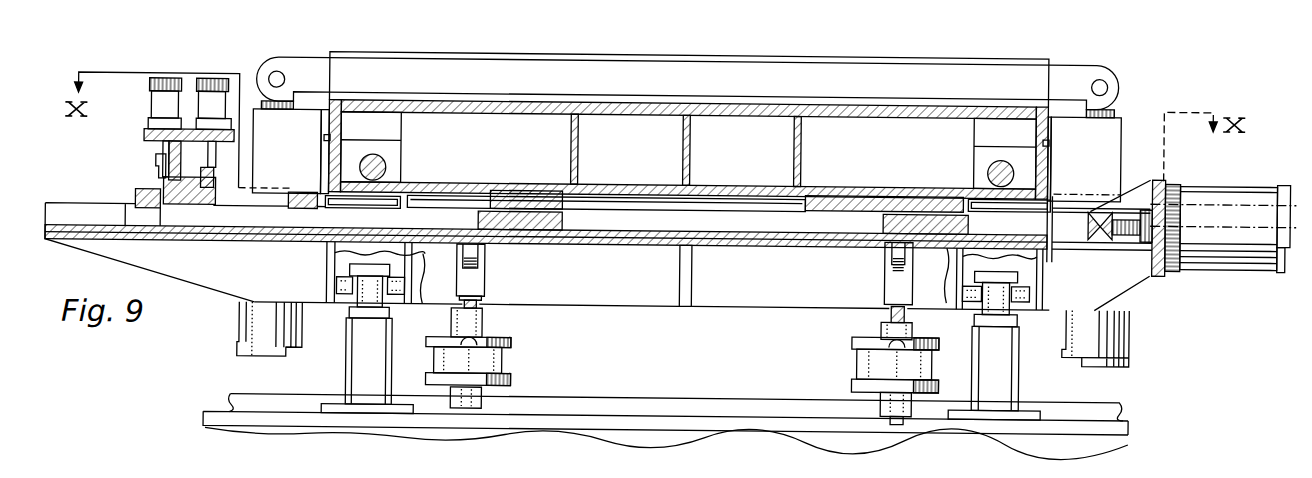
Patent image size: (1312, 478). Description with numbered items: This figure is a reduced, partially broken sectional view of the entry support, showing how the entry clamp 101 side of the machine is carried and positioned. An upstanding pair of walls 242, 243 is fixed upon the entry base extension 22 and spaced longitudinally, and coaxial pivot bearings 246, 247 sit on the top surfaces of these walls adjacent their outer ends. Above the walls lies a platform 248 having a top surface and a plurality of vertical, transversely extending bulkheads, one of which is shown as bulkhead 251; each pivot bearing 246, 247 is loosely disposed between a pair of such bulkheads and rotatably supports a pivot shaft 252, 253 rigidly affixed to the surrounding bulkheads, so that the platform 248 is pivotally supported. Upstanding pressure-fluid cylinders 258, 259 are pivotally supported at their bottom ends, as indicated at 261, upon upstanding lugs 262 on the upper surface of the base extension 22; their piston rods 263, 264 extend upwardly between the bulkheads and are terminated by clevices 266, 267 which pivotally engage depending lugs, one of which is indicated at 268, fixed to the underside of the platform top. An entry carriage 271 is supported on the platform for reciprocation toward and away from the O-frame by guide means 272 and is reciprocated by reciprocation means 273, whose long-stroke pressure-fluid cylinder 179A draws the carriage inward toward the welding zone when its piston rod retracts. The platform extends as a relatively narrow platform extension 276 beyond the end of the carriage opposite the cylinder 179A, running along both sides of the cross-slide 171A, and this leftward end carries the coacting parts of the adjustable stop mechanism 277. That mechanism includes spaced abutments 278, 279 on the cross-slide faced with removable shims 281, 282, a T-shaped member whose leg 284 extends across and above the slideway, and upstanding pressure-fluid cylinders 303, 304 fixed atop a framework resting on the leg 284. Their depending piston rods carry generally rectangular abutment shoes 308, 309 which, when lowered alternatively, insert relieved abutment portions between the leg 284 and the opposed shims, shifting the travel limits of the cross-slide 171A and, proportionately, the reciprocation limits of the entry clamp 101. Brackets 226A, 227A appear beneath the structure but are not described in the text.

The entry clamp 101 is at (777, 57).
The adjustable stop mechanism 277 is at (185, 58).
The pressure-fluid cylinder 304 is at (236, 73).
The pressure-fluid cylinder 303 is at (150, 107).
The abutment shoe 308 is at (155, 168).
The abutment 278 is at (135, 204).
The abutment 279 is at (314, 200).
The shim 282 is at (294, 196).
The guide means 272 is at (413, 177).
The entry carriage 271 is at (688, 150).
The reciprocation means 273 is at (1196, 164).
The abutment shoe 309 is at (216, 209).
The shim 281 is at (165, 214).
The leg 284 is at (188, 212).
The cross-slide 171A is at (263, 230).
The pivot bearing 246 is at (365, 289).
The clevis 266 is at (472, 280).
The piston rod 263 is at (480, 309).
The platform 248 is at (652, 275).
The depending lug 268 is at (892, 262).
The bulkhead 251 is at (961, 278).
The clevis 267 is at (888, 283).
The pivot bearing 247 is at (1003, 288).
The pressure-fluid cylinder 179A is at (1204, 252).
The platform extension 276 is at (215, 281).
The bracket 226A is at (256, 341).
The piston rod 264 is at (893, 314).
The pivot shaft 253 is at (975, 298).
The pivot shaft 252 is at (455, 334).
The pressure-fluid cylinder 258 is at (497, 364).
The pressure-fluid cylinder 259 is at (873, 365).
The pivotal support 261 is at (882, 409).
The wall 242 is at (357, 375).
The wall 243 is at (1003, 382).
The bracket 227A is at (1120, 338).
The entry base extension 22 is at (732, 440).
The upstanding lug 262 is at (894, 423).